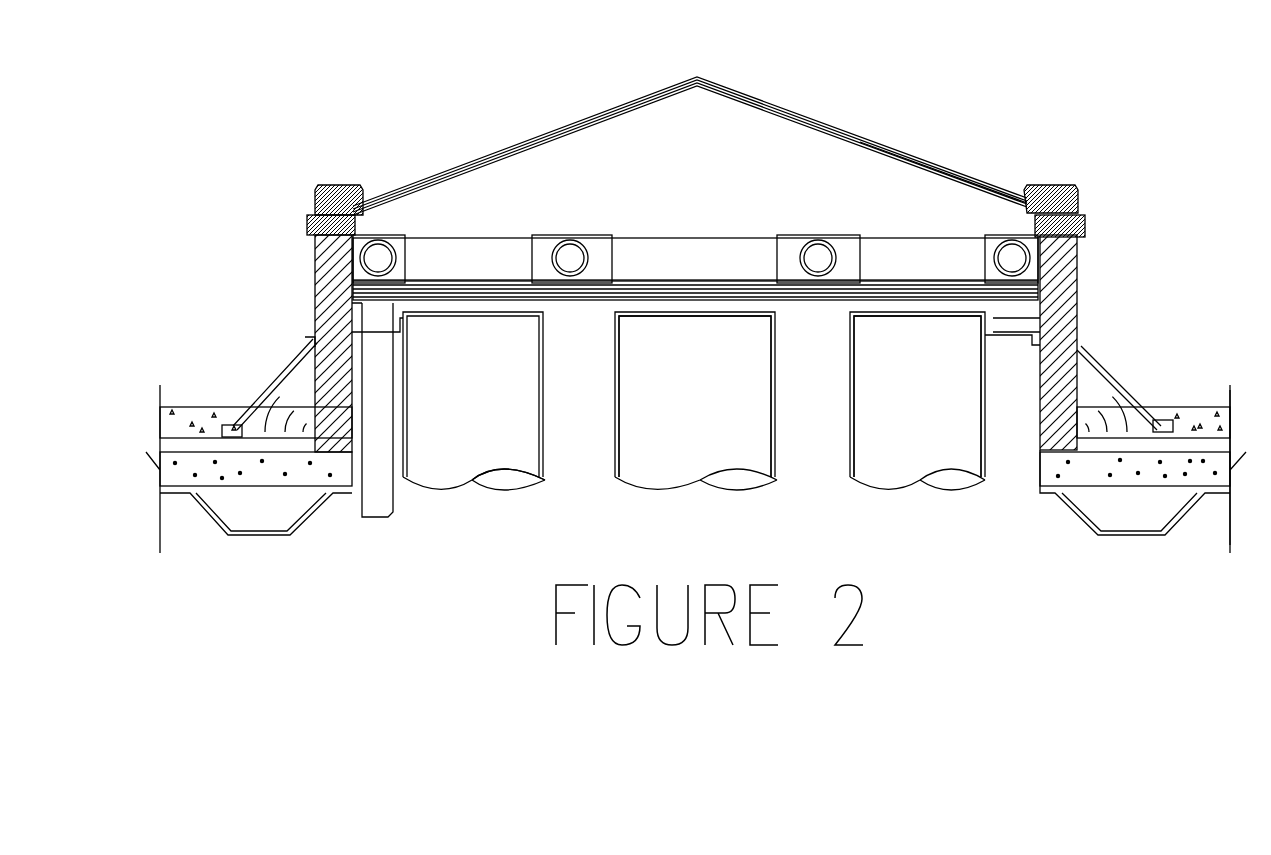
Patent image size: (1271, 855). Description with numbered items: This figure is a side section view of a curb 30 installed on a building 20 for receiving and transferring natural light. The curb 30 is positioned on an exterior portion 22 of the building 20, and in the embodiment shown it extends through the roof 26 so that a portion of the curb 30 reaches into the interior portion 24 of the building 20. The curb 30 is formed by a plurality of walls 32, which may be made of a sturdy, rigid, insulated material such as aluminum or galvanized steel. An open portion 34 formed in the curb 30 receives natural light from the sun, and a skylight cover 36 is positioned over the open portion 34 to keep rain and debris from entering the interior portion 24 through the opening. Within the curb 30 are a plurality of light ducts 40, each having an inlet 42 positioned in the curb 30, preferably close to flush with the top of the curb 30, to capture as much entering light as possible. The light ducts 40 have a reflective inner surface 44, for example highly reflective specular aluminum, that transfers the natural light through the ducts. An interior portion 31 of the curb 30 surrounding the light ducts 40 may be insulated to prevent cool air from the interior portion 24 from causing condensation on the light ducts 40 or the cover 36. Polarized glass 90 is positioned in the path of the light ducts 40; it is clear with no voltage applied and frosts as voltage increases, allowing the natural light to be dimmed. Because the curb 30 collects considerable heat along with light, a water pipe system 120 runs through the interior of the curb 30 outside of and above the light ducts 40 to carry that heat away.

The building 20 is at (1093, 473).
The exterior portion 22 is at (1203, 245).
The interior portion 24 is at (1008, 455).
The roof 26 is at (212, 407).
The curb 30 is at (299, 208).
The interior portion of curb 31 is at (813, 455).
The walls 32 is at (1067, 316).
The open portion 34 is at (805, 168).
The skylight cover 36 is at (912, 157).
The light ducts 40 is at (545, 480).
The inlet 42 is at (683, 307).
The reflective inner surface 44 is at (507, 487).
The polarized glass 90 is at (352, 282).
The water pipe system 120 is at (428, 240).